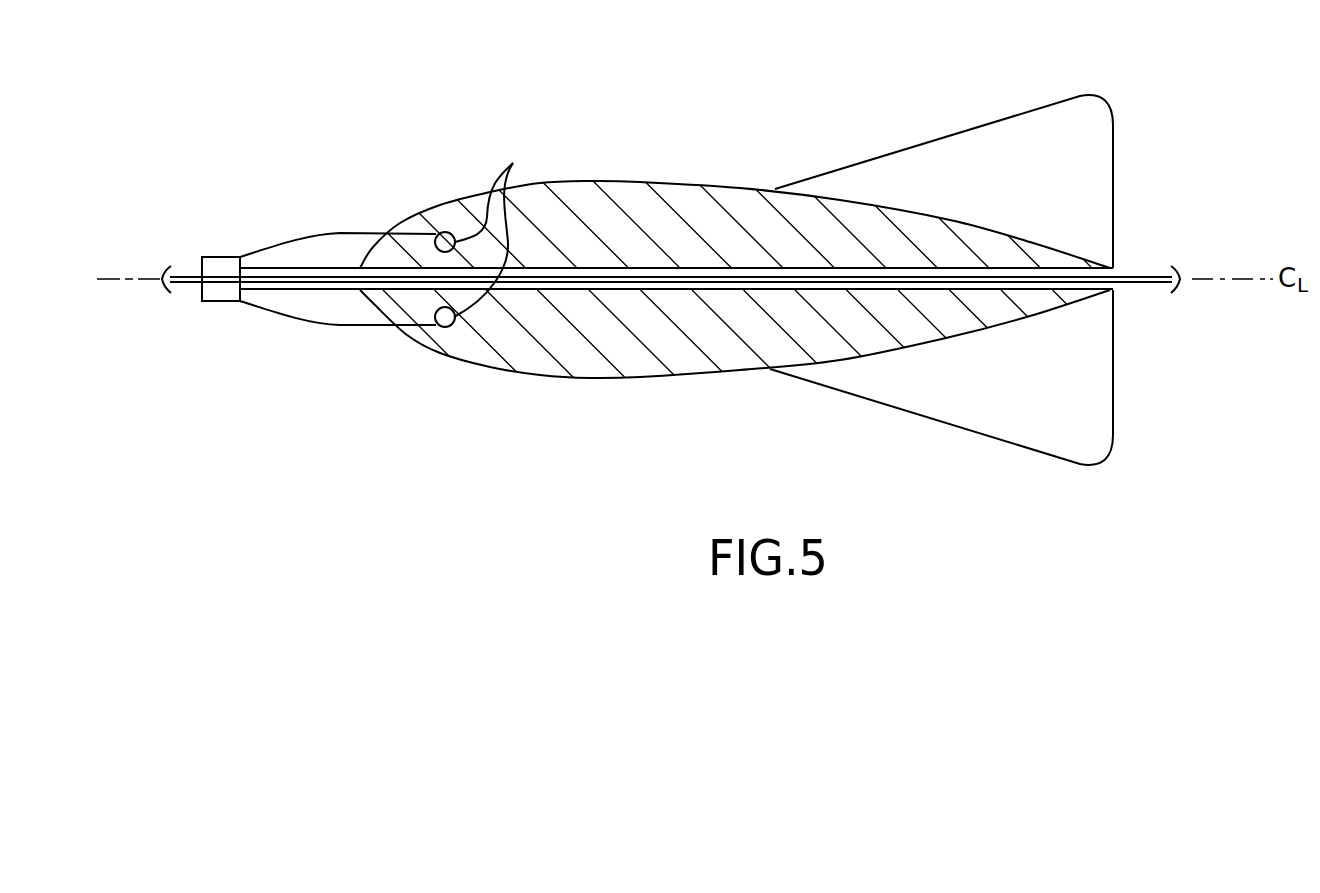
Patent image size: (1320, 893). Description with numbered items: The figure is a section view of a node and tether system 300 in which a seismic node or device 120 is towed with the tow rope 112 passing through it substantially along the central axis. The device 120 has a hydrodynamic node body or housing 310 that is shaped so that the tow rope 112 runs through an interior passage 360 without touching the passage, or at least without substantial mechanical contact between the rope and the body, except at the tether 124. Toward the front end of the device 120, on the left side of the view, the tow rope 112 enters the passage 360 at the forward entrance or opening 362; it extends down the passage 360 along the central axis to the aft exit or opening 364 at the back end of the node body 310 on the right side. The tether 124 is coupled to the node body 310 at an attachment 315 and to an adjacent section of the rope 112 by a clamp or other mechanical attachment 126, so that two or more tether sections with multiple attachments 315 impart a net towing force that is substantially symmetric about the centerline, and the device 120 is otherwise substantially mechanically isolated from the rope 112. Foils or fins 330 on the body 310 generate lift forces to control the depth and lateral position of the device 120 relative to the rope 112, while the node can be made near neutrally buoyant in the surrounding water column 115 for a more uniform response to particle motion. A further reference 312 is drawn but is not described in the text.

The node and tether system 300 is at (247, 138).
The water column 115 is at (335, 475).
The seismic node 120 is at (461, 128).
The clamp 126 is at (220, 257).
The tether 124 is at (305, 241).
The passage 360 is at (740, 290).
The forward opening 362 is at (314, 306).
The tow rope 112 is at (1152, 277).
The aft opening 364 is at (1127, 285).
The expandable member 312 is at (618, 410).
The node body 310 is at (372, 302).
The attachment 315 is at (484, 231).
The fins 330 is at (1095, 183).